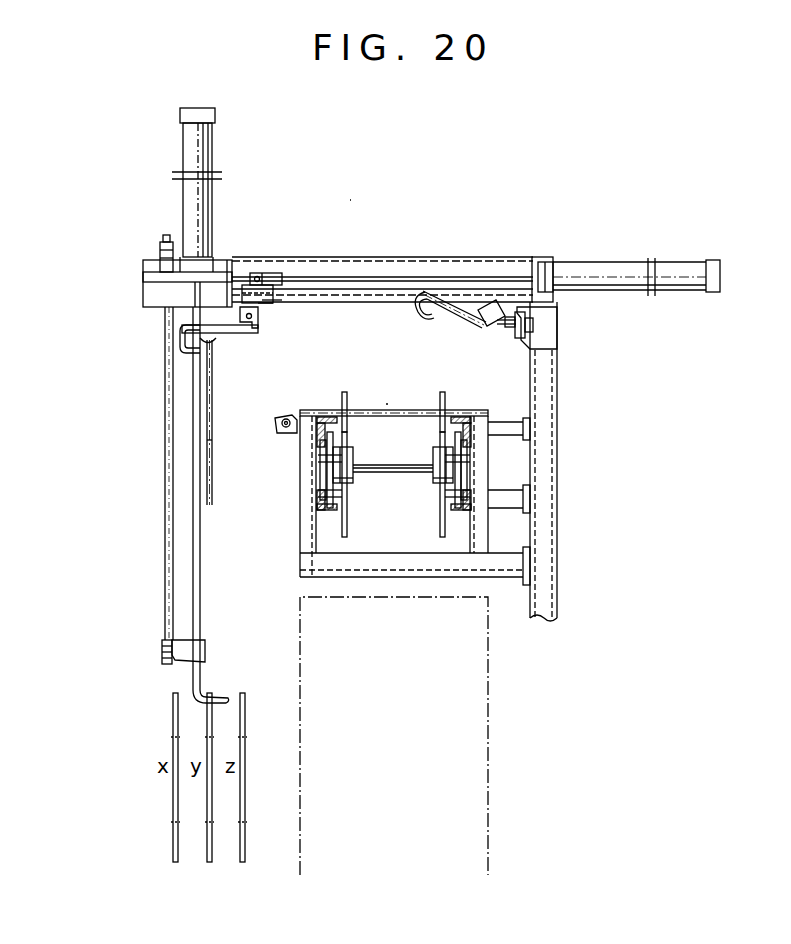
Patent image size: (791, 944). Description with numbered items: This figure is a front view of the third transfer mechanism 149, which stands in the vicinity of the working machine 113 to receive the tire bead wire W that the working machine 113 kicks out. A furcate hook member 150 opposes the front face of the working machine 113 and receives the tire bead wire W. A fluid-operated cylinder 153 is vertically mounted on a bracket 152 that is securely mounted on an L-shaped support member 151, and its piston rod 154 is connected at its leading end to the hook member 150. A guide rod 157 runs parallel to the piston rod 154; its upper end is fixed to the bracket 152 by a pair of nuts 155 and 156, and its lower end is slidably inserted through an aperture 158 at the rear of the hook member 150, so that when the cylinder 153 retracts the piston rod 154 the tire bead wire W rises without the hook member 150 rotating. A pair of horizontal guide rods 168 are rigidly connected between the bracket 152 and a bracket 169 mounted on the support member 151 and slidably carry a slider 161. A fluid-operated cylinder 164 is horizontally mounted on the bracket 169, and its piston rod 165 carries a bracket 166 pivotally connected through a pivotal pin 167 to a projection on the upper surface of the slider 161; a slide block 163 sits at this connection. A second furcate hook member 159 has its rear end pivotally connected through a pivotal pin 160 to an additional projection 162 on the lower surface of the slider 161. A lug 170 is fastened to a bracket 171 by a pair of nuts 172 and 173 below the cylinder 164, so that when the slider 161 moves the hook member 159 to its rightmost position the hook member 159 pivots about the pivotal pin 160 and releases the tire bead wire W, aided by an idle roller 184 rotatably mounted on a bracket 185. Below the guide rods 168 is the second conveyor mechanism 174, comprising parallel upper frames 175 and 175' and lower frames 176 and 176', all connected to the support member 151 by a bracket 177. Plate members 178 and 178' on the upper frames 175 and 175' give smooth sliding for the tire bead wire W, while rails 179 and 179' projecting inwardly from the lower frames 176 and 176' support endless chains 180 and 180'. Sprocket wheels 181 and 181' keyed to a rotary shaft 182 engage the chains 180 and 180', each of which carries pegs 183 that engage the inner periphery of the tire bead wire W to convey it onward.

The working machine 113 is at (486, 752).
The third transfer mechanism 149 is at (352, 195).
The furcate hook member 150 is at (205, 648).
The L-shaped support member 151 is at (557, 393).
The bracket 152 is at (148, 262).
The fluid-operated cylinder 153 is at (208, 190).
The piston rod 154 is at (200, 550).
The nut 155 is at (148, 280).
The nut 156 is at (163, 252).
The guide rod 157 is at (165, 436).
The aperture 158 is at (160, 650).
The furcate hook member 159 is at (214, 340).
The pivotal pin 160 is at (248, 333).
The slider 161 is at (273, 302).
The additional projection 162 is at (258, 318).
The slide block 163 is at (250, 285).
The fluid-operated cylinder 164 is at (600, 263).
The piston rod 165 is at (428, 278).
The bracket 166 is at (280, 272).
The pivotal pin 167 is at (258, 276).
The horizontal guide rod 168 is at (356, 282).
The bracket 169 is at (536, 268).
The lug 170 is at (503, 323).
The bracket 171 is at (546, 335).
The nut 172 is at (538, 322).
The nut 173 is at (518, 331).
The second conveyor mechanism 174 is at (388, 400).
The upper frame 175 is at (290, 470).
The upper frame 175' is at (539, 464).
The lower frame 176 is at (363, 495).
The lower frame 176' is at (457, 532).
The bracket 177 is at (302, 560).
The plate member 178 is at (310, 403).
The plate member 178' is at (480, 414).
The rail 179 is at (352, 510).
The rail 179' is at (433, 516).
The endless chain 180 is at (296, 474).
The endless chain 180' is at (529, 470).
The sprocket wheel 181 is at (356, 453).
The sprocket wheel 181' is at (422, 453).
The rotary shaft 182 is at (388, 473).
The peg 183 is at (357, 383).
The idle roller 184 is at (278, 418).
The bracket 185 is at (290, 434).
The tire bead wire W is at (212, 452).